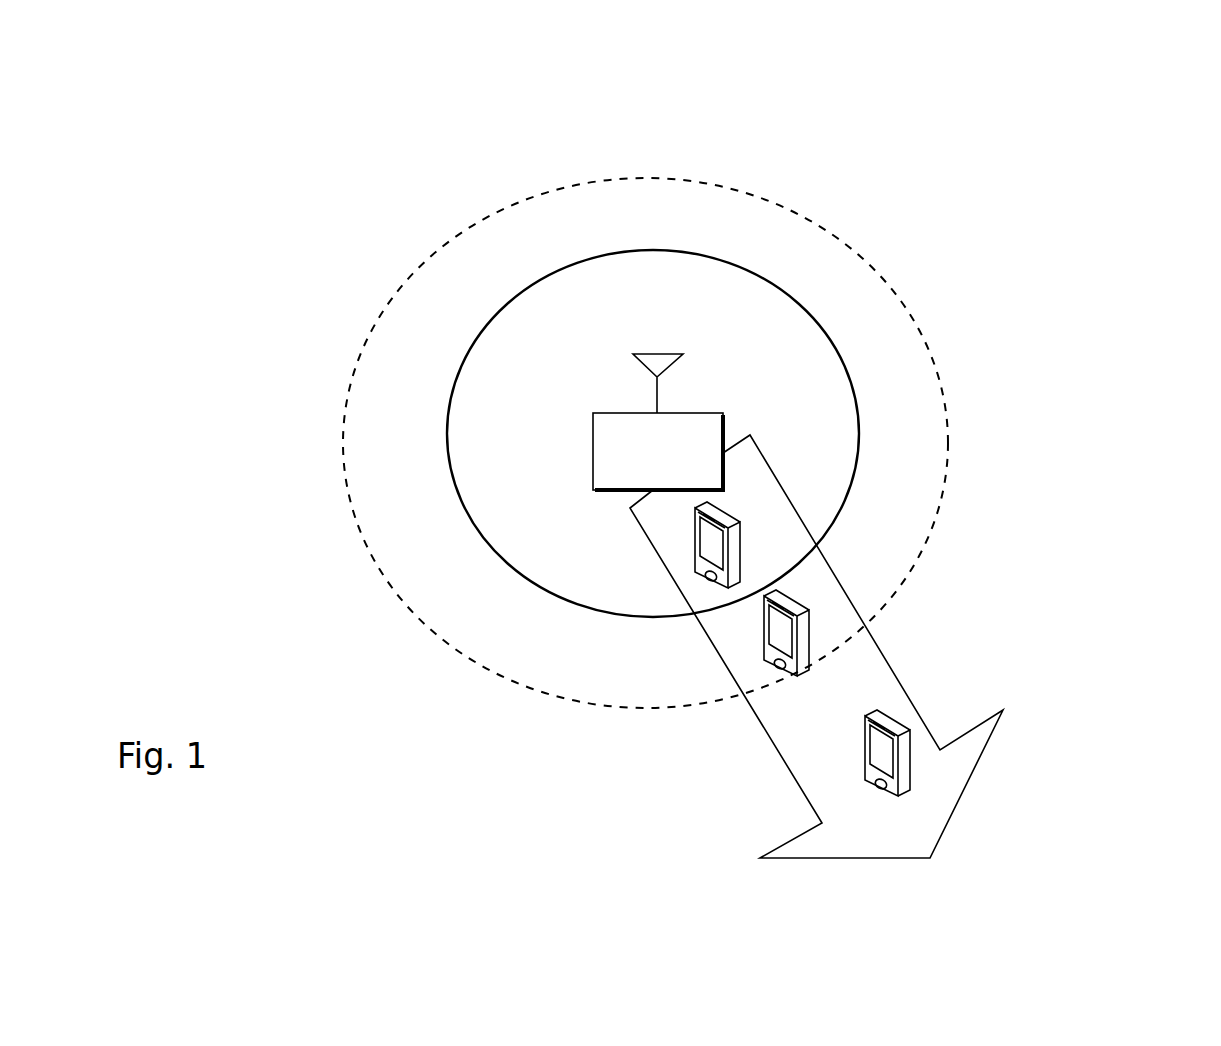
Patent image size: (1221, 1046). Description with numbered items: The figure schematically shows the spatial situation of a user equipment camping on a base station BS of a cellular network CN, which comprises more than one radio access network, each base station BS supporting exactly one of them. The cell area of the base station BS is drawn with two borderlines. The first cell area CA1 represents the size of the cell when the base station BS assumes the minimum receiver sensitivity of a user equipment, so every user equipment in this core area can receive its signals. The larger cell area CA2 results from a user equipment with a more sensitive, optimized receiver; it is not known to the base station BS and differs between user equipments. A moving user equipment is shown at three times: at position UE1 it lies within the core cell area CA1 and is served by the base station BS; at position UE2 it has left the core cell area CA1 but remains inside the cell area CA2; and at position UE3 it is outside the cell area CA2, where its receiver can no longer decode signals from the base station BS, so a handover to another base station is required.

The cellular network CN is at (1028, 162).
The first cell area CA1 is at (687, 250).
The cell area CA2 is at (845, 237).
The base station BS is at (659, 423).
The user equipment at the first time UE1 is at (692, 577).
The user equipment at the second time UE2 is at (823, 623).
The user equipment at the third time UE3 is at (918, 758).